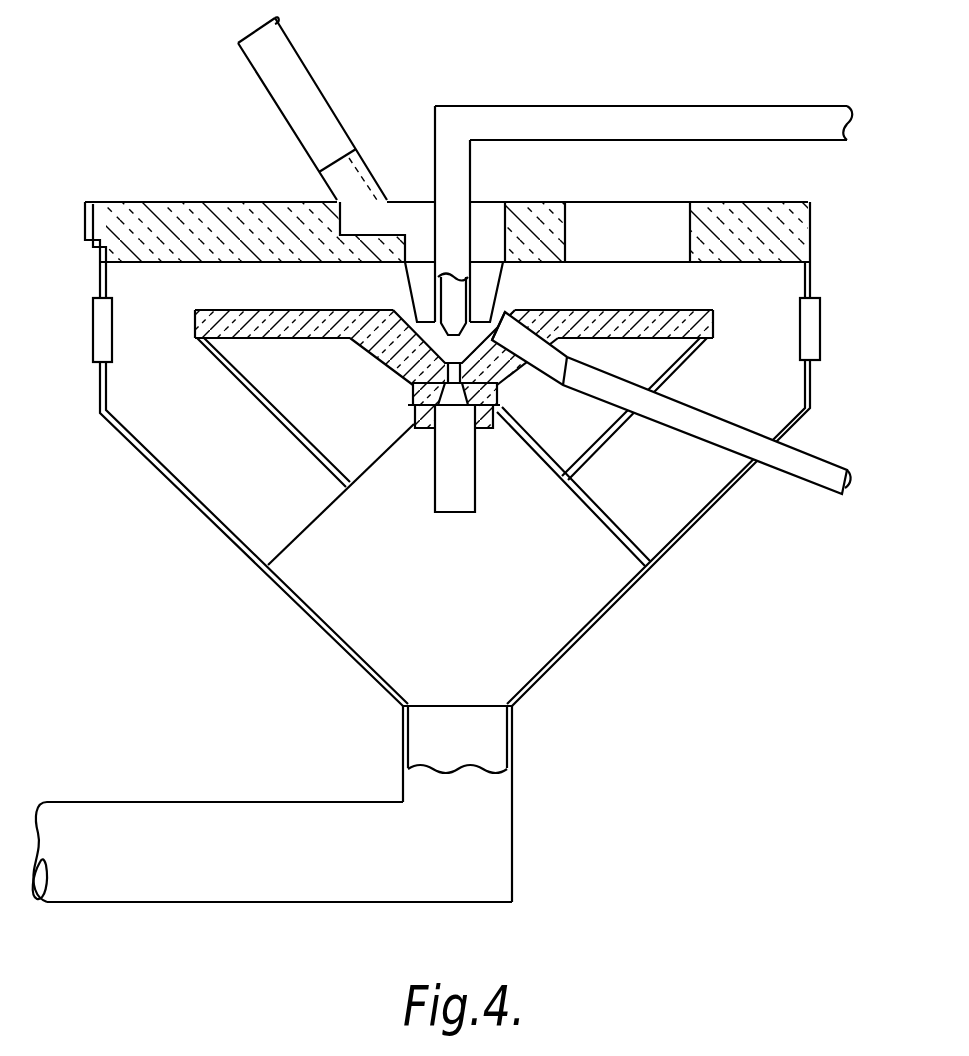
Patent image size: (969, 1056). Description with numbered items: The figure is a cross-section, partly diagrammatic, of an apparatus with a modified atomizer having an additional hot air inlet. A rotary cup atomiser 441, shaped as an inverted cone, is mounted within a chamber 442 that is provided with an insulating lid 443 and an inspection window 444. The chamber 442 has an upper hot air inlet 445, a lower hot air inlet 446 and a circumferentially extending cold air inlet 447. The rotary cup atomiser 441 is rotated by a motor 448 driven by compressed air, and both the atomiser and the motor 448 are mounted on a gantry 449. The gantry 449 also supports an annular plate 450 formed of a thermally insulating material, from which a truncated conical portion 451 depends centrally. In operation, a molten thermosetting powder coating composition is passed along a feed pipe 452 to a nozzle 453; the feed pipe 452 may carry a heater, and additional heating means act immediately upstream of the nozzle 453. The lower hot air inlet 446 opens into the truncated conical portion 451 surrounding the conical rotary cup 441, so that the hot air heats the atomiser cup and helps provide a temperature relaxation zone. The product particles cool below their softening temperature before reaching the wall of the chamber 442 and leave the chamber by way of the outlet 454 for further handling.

The rotary cup atomiser 441 is at (418, 353).
The chamber 442 is at (712, 537).
The insulating lid 443 is at (126, 202).
The inspection window 444 is at (670, 226).
The upper hot air inlet 445 is at (305, 86).
The lower hot air inlet 446 is at (820, 467).
The cold air inlet 447 is at (93, 322).
The motor 448 is at (457, 497).
The gantry 449 is at (306, 518).
The annular plate 450 is at (220, 310).
The truncated conical portion 451 is at (364, 364).
The feed pipe 452 is at (637, 113).
The nozzle 453 is at (494, 338).
The outlet 454 is at (480, 824).